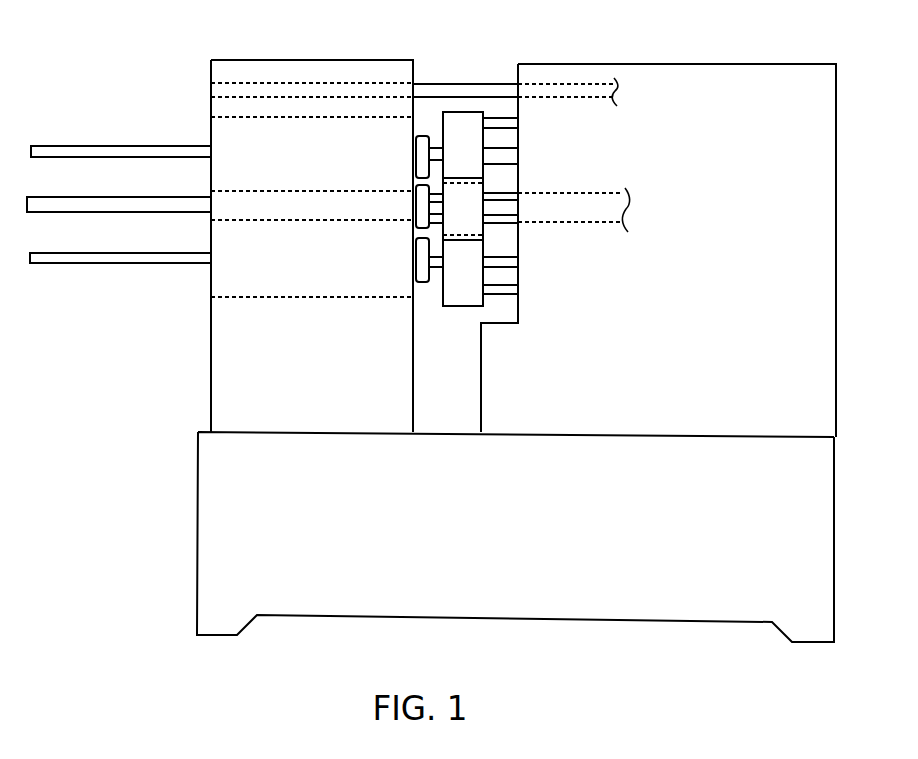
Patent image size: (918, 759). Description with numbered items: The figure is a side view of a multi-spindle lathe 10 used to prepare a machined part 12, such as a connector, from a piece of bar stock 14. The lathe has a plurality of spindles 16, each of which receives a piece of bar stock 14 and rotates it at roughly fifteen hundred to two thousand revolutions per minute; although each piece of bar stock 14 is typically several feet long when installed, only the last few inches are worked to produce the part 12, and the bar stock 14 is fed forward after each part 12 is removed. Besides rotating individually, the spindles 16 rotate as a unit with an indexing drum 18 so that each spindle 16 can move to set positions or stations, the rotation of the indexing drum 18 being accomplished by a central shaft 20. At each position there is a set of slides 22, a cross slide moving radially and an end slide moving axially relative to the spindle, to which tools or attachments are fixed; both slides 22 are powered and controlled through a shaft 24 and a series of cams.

The multi-spindle lathe 10 is at (733, 80).
The machined part 12 is at (428, 135).
The bar stock 14 is at (124, 148).
The spindles 16 is at (416, 151).
The indexing drum 18 is at (245, 290).
The central shaft 20 is at (576, 197).
The slides 22 is at (474, 154).
The shaft 24 is at (510, 268).